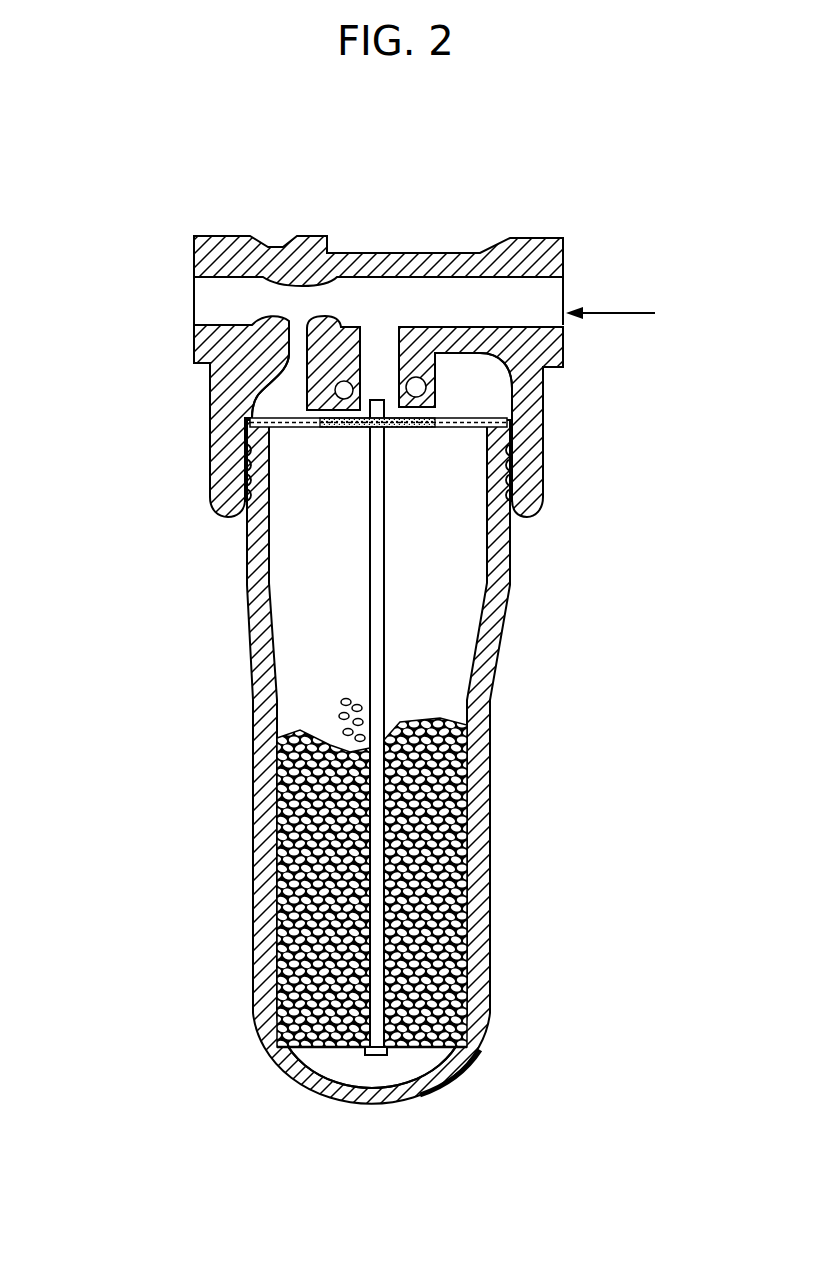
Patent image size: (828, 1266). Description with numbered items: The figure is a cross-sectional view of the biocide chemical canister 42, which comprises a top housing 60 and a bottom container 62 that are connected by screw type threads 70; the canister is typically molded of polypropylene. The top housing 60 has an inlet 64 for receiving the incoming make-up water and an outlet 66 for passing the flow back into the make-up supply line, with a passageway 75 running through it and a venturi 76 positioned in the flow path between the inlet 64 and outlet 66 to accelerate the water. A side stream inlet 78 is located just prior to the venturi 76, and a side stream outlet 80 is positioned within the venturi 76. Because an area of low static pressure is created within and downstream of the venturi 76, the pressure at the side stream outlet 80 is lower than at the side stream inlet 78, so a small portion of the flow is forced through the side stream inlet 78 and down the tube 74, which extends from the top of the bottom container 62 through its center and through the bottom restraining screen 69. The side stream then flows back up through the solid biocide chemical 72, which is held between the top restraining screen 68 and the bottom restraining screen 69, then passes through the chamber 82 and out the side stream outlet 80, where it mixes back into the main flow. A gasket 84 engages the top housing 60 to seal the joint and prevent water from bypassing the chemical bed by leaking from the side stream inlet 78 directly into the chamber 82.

The canister 42 is at (150, 248).
The top housing 60 is at (563, 238).
The bottom container 62 is at (493, 815).
The inlet 64 is at (567, 283).
The outlet 66 is at (193, 297).
The top restraining screen 68 is at (291, 429).
The bottom restraining screen 69 is at (300, 1053).
The screw type threads 70 is at (514, 518).
The biocide chemical 72 is at (296, 735).
The tube 74 is at (386, 589).
The passageway 75 is at (455, 294).
The venturi 76 is at (343, 266).
The side stream inlet 78 is at (378, 350).
The side stream outlet 80 is at (300, 322).
The chamber 82 is at (303, 404).
The gasket 84 is at (403, 428).